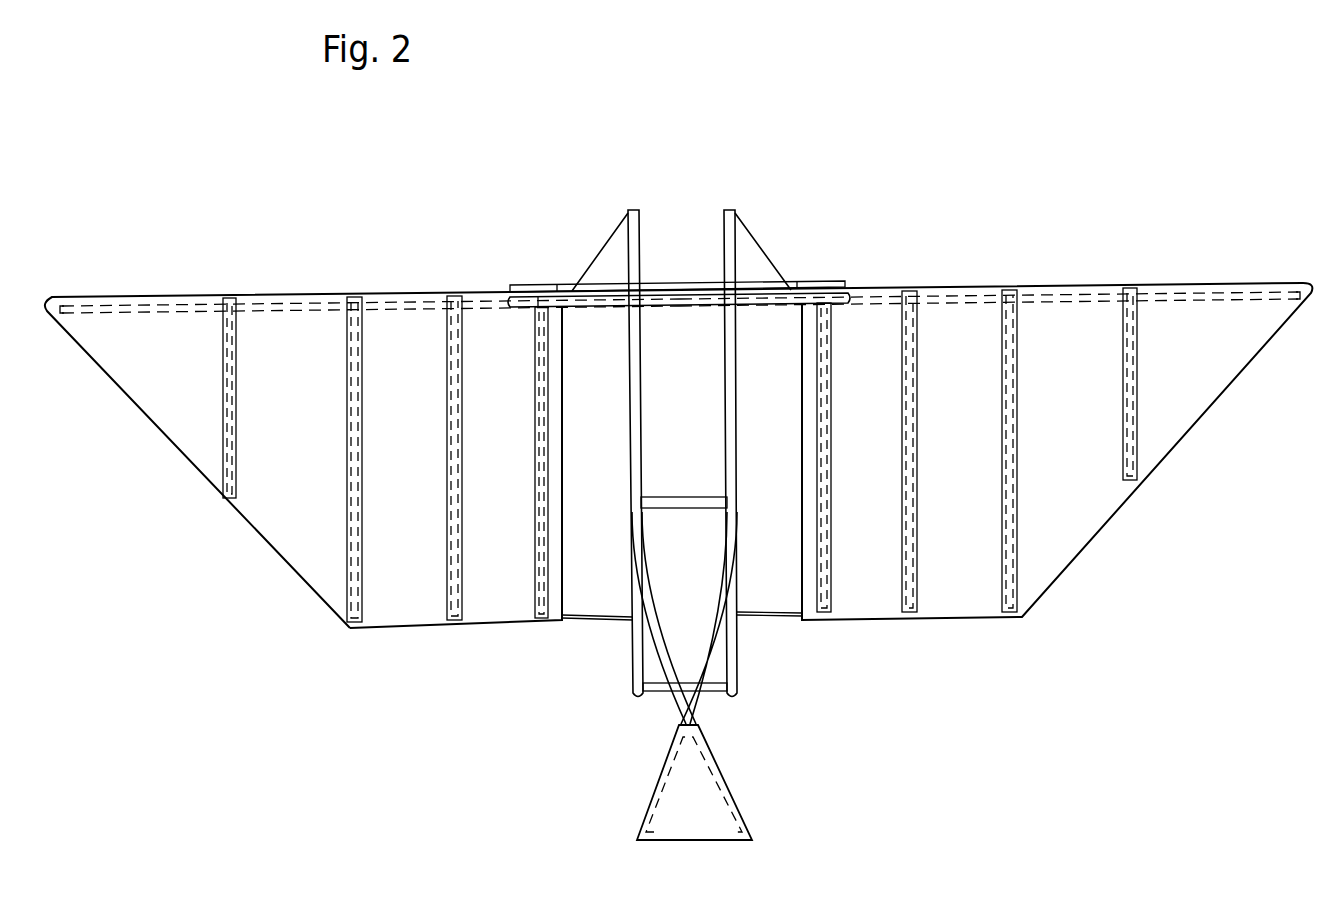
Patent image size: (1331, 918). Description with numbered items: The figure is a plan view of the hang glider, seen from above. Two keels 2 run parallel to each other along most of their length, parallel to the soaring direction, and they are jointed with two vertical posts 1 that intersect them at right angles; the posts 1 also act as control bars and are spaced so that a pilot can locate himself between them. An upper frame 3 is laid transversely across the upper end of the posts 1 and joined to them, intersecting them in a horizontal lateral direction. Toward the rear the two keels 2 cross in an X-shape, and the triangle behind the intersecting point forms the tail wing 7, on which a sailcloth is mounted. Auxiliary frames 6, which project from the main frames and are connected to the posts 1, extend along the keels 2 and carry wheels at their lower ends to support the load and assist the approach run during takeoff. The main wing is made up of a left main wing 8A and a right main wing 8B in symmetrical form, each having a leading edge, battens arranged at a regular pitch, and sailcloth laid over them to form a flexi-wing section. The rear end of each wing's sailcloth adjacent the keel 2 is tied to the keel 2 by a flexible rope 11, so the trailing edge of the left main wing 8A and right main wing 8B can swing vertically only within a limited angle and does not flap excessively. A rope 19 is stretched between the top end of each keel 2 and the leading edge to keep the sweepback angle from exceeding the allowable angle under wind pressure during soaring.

The post 1 is at (617, 291).
The keel 2 is at (641, 411).
The upper frame 3 is at (549, 293).
The auxiliary frame 6 is at (635, 648).
The tail wing 7 is at (707, 800).
The left main wing 8A is at (405, 600).
The right main wing 8B is at (965, 585).
The flexible rope 11 is at (586, 618).
The rope 19 is at (611, 236).